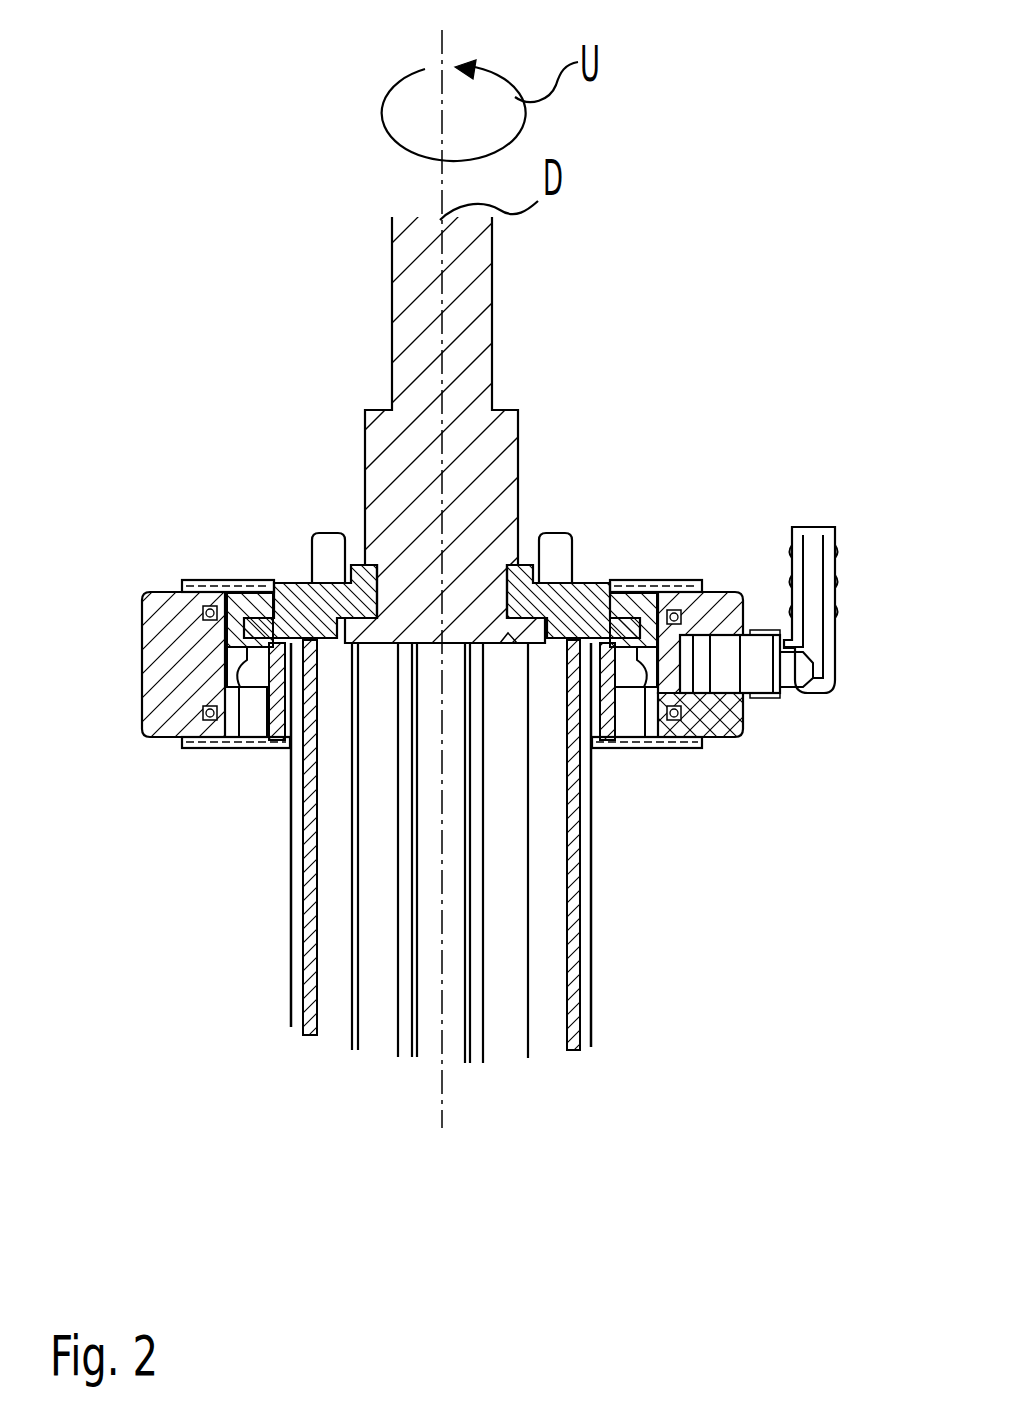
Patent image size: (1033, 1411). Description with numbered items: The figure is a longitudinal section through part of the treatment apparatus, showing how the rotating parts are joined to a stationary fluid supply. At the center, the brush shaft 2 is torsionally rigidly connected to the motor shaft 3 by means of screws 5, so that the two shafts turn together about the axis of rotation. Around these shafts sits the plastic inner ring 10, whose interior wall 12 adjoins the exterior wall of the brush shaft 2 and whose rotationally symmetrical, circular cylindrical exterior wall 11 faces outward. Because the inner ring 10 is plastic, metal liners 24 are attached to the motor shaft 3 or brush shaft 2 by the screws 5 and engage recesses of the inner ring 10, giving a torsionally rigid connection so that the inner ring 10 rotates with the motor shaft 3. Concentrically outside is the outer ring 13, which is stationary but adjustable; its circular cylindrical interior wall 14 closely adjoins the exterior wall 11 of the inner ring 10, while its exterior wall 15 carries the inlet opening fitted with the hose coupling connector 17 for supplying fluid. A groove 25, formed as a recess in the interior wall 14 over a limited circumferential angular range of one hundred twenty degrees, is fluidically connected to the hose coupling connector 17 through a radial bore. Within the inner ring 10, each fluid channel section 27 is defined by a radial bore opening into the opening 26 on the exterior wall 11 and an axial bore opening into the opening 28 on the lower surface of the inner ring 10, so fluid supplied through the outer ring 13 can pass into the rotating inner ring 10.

The brush shaft 2 is at (503, 928).
The motor shaft 3 is at (457, 352).
The screws 5 is at (328, 522).
The inner ring 10 is at (248, 588).
The exterior wall 11 is at (212, 592).
The interior wall 12 is at (273, 585).
The outer ring 13 is at (175, 670).
The interior wall 14 is at (215, 748).
The exterior wall 15 is at (142, 737).
The hose coupling connector 17 is at (843, 606).
The metal liners 24 is at (275, 712).
The groove 25 is at (743, 710).
The opening 26 is at (715, 737).
The fluid channel section 27 is at (637, 715).
The opening 28 is at (632, 758).